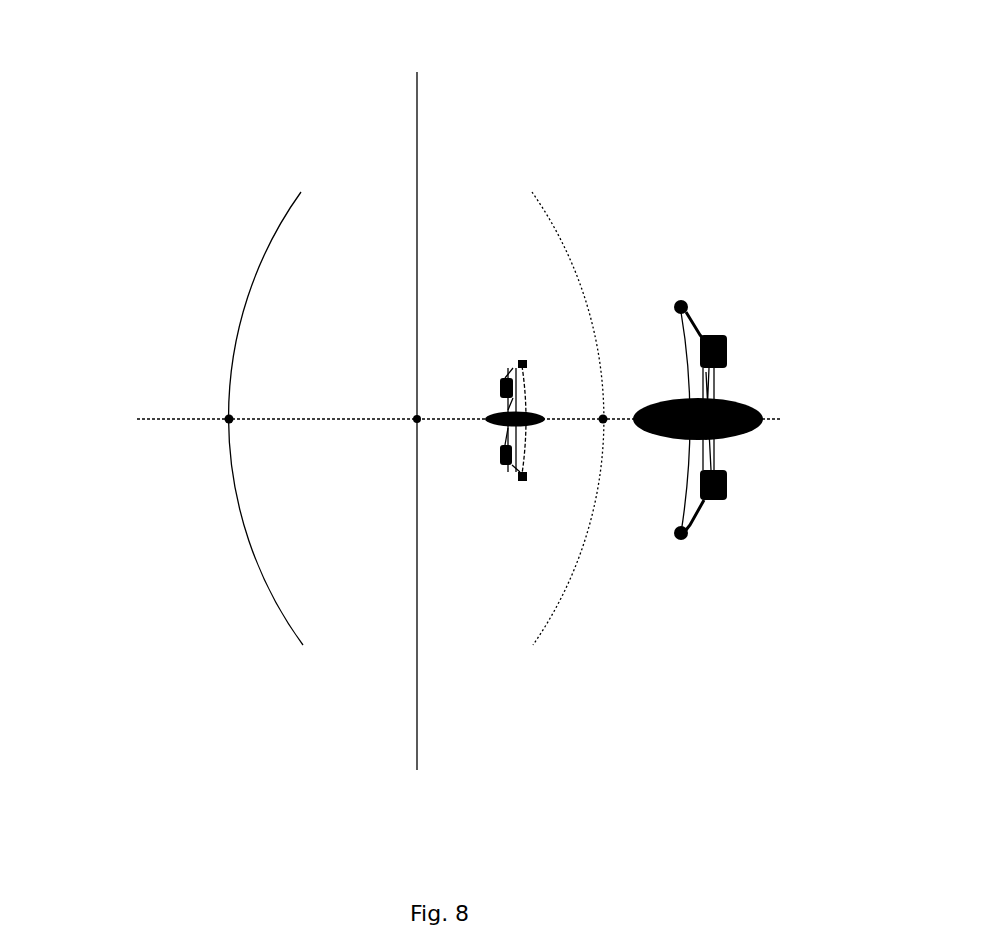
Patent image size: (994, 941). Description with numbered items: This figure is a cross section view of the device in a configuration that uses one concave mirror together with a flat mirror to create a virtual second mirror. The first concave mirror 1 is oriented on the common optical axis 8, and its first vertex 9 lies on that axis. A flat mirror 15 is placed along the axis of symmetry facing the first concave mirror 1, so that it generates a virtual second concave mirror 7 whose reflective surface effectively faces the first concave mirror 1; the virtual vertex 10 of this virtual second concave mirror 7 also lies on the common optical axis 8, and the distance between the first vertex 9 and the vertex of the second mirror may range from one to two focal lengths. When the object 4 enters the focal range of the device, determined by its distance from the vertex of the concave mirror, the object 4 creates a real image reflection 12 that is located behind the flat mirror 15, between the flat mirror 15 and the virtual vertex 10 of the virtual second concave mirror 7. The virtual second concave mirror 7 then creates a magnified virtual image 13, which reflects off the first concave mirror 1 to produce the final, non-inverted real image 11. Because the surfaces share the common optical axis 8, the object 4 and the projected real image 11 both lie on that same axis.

The first concave mirror 1 is at (272, 232).
The object 4 is at (717, 330).
The virtual second concave mirror 7 is at (560, 238).
The common optical axis 8 is at (163, 420).
The first vertex 9 is at (225, 427).
The virtual vertex 10 is at (603, 419).
The real image 11 is at (523, 365).
The real image reflection 12 is at (523, 478).
The magnified virtual image 13 is at (710, 522).
The flat mirror 15 is at (412, 154).